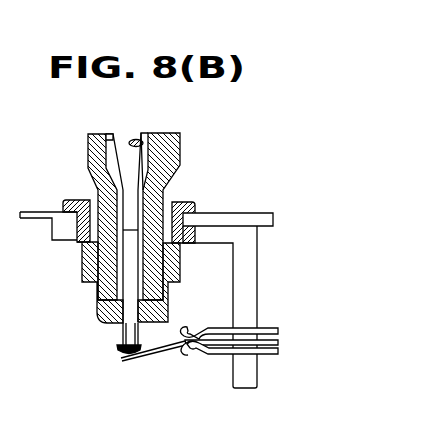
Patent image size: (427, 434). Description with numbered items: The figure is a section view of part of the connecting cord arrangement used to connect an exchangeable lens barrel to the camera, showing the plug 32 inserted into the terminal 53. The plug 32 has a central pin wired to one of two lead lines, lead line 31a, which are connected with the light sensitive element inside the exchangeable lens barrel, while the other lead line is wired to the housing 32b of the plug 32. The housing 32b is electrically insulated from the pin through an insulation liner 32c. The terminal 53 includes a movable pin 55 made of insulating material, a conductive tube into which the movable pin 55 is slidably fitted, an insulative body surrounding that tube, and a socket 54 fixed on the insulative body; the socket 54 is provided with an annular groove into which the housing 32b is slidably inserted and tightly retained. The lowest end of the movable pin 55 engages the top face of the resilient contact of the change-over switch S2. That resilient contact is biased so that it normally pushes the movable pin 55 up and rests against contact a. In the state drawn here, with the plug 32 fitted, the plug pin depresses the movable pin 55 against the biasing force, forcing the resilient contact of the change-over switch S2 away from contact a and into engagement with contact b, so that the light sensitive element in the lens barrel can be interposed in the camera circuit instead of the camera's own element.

The plug 32 is at (180, 147).
The housing 32b is at (87, 153).
The insulation liner 32c is at (110, 132).
The lead line 31a is at (131, 139).
The terminal 53 is at (67, 200).
The socket 54 is at (88, 268).
The movable pin 55 is at (119, 341).
The change-over switch S2 is at (141, 360).
The contact a is at (189, 331).
The contact b is at (186, 355).